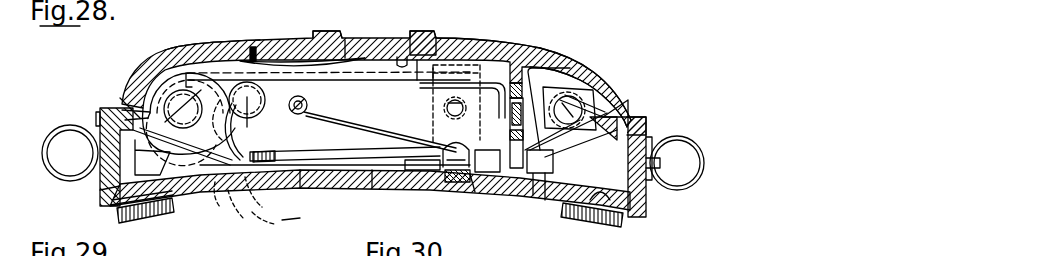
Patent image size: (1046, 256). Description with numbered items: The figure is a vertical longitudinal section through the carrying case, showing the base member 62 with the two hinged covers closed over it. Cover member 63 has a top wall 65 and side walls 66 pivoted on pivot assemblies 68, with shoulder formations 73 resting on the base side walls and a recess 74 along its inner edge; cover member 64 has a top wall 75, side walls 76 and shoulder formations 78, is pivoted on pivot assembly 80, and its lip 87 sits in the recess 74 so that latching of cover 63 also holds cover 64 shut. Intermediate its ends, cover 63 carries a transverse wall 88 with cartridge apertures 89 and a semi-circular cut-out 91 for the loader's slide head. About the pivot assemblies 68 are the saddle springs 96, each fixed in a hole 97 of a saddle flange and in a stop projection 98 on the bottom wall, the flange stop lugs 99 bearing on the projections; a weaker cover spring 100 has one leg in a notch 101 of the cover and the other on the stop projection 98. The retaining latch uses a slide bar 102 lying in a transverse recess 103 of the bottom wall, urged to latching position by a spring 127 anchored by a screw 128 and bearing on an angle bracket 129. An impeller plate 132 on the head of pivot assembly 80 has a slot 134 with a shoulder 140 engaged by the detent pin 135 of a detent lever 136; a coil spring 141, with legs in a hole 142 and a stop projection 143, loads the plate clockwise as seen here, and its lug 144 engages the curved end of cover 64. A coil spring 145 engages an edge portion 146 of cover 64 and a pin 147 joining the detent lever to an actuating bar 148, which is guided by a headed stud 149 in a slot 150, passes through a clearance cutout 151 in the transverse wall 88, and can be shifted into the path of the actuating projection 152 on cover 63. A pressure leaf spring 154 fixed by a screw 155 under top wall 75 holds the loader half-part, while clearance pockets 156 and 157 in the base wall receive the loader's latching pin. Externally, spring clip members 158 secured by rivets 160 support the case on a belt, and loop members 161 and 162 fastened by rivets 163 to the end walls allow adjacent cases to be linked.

The base member 62 is at (344, 189).
The cover member 63 is at (543, 41).
The cover member 64 is at (221, 30).
The top wall 65 is at (492, 45).
The side walls 66 is at (430, 83).
The pivot assemblies 68 is at (577, 150).
The shoulder formations 73 is at (587, 66).
The recess 74 is at (432, 38).
The top wall 75 is at (278, 38).
The side walls 76 is at (372, 81).
The shoulder formations 78 is at (182, 48).
The pivot assembly 80 is at (253, 47).
The lip 87 is at (400, 40).
The transverse wall 88 is at (517, 62).
The apertures 89 is at (462, 100).
The semi-circular cut-out 91 is at (505, 133).
The coil springs 96 is at (575, 162).
The hole 97 is at (562, 109).
The stop projection 98 is at (533, 197).
The stop lugs 99 is at (546, 200).
The coil spring 100 is at (615, 100).
The notch 101 is at (629, 101).
The slide bar 102 is at (460, 184).
The transverse recess 103 is at (428, 190).
The spring 127 is at (340, 128).
The screw 128 is at (308, 101).
The angle bracket 129 is at (438, 104).
The impeller plate 132 is at (220, 194).
The slot 134 is at (250, 130).
The detent pin 135 is at (254, 119).
The detent lever 136 is at (262, 194).
The shoulder 140 is at (278, 156).
The coil spring 141 is at (150, 130).
The hole 142 is at (125, 108).
The stop projection 143 is at (103, 193).
The lug 144 is at (104, 116).
The coil spring 145 is at (268, 226).
The edge portion 146 is at (248, 220).
The pin 147 is at (284, 222).
The actuating bar 148 is at (372, 188).
The headed stud 149 is at (456, 116).
The slot 150 is at (418, 184).
The clearance cutout 151 is at (490, 174).
The actuating projection 152 is at (652, 128).
The pressure leaf spring 154 is at (347, 38).
The screw 155 is at (262, 40).
The clearance pocket 156 is at (476, 194).
The clearance pocket 157 is at (305, 189).
The spring clip members 158 is at (160, 200).
The rivets 160 is at (612, 8).
The loop member 161 is at (42, 152).
The loop member 162 is at (700, 176).
The rivets 163 is at (664, 163).